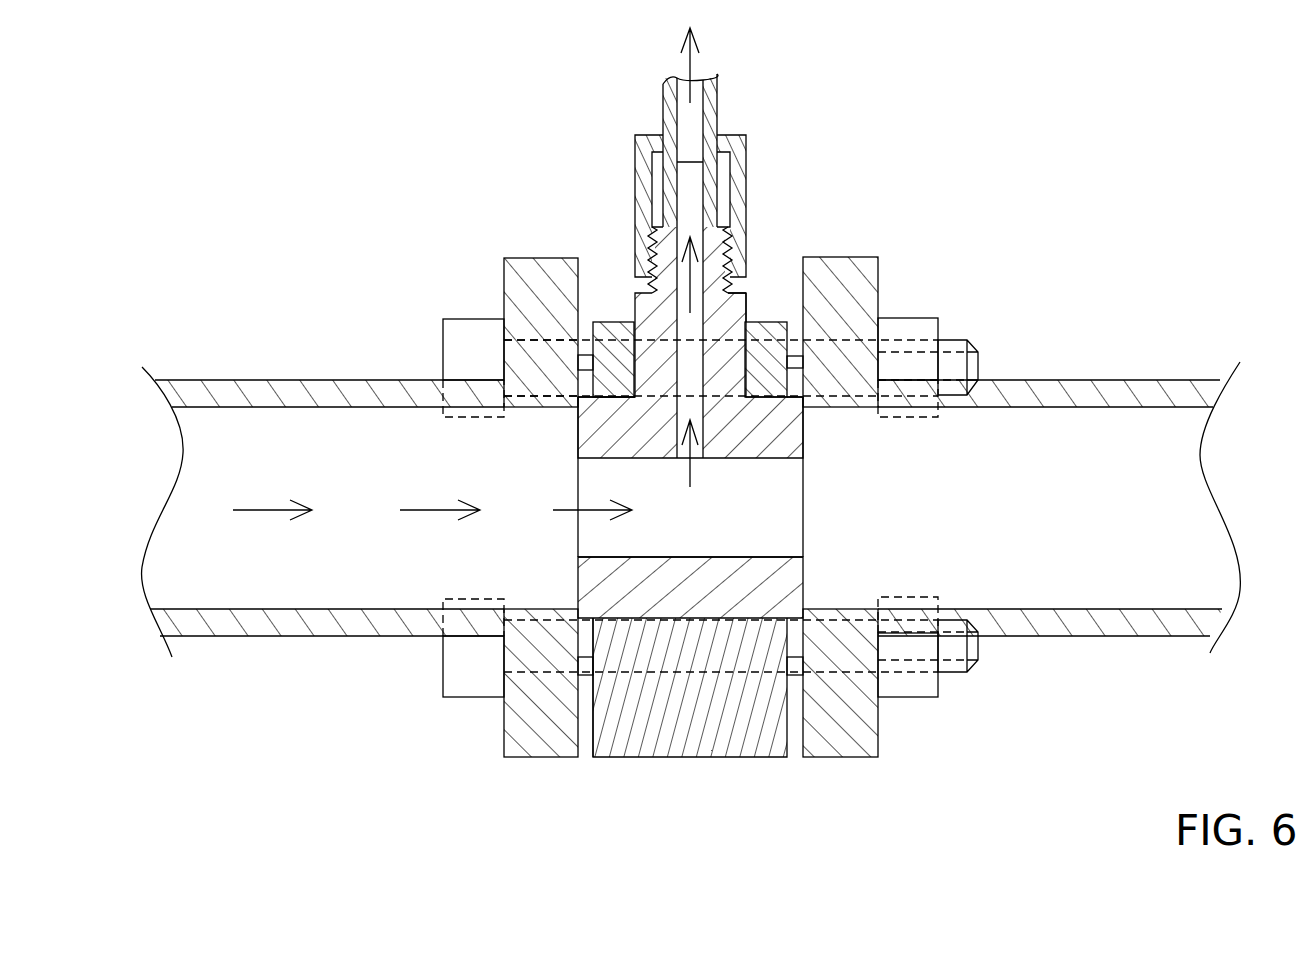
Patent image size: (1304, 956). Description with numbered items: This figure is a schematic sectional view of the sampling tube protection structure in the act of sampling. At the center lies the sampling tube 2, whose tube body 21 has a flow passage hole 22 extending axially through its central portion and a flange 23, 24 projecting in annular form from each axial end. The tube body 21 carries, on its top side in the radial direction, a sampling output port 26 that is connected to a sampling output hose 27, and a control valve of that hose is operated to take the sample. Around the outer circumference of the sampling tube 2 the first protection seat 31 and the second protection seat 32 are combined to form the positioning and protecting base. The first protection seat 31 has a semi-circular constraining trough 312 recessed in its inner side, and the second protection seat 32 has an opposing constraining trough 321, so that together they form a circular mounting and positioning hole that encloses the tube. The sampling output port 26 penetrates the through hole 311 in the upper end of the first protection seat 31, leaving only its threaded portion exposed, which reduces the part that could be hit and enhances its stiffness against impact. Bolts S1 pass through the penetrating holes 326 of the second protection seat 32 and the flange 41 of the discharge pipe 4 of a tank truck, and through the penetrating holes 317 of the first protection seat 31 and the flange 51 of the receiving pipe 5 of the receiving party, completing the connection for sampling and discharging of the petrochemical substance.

The sampling tube 2 is at (622, 128).
The sampling output hose 27 is at (645, 177).
The sampling output port 26 is at (657, 233).
The first protection seat 31 is at (622, 322).
The through hole 311 is at (728, 320).
The constraining trough 312 is at (585, 430).
The penetrating hole 317 is at (578, 337).
The flange 41 is at (528, 273).
The flange 51 is at (847, 262).
The flange 24 is at (590, 370).
The flange 23 is at (790, 373).
The tube body 21 is at (805, 442).
The flow passage hole 22 is at (785, 527).
The bolt S1 is at (455, 340).
The discharge pipe 4 is at (328, 392).
The receiving pipe 5 is at (1053, 387).
The second protection seat 32 is at (647, 730).
The constraining trough 321 is at (623, 612).
The penetrating hole 326 is at (615, 670).